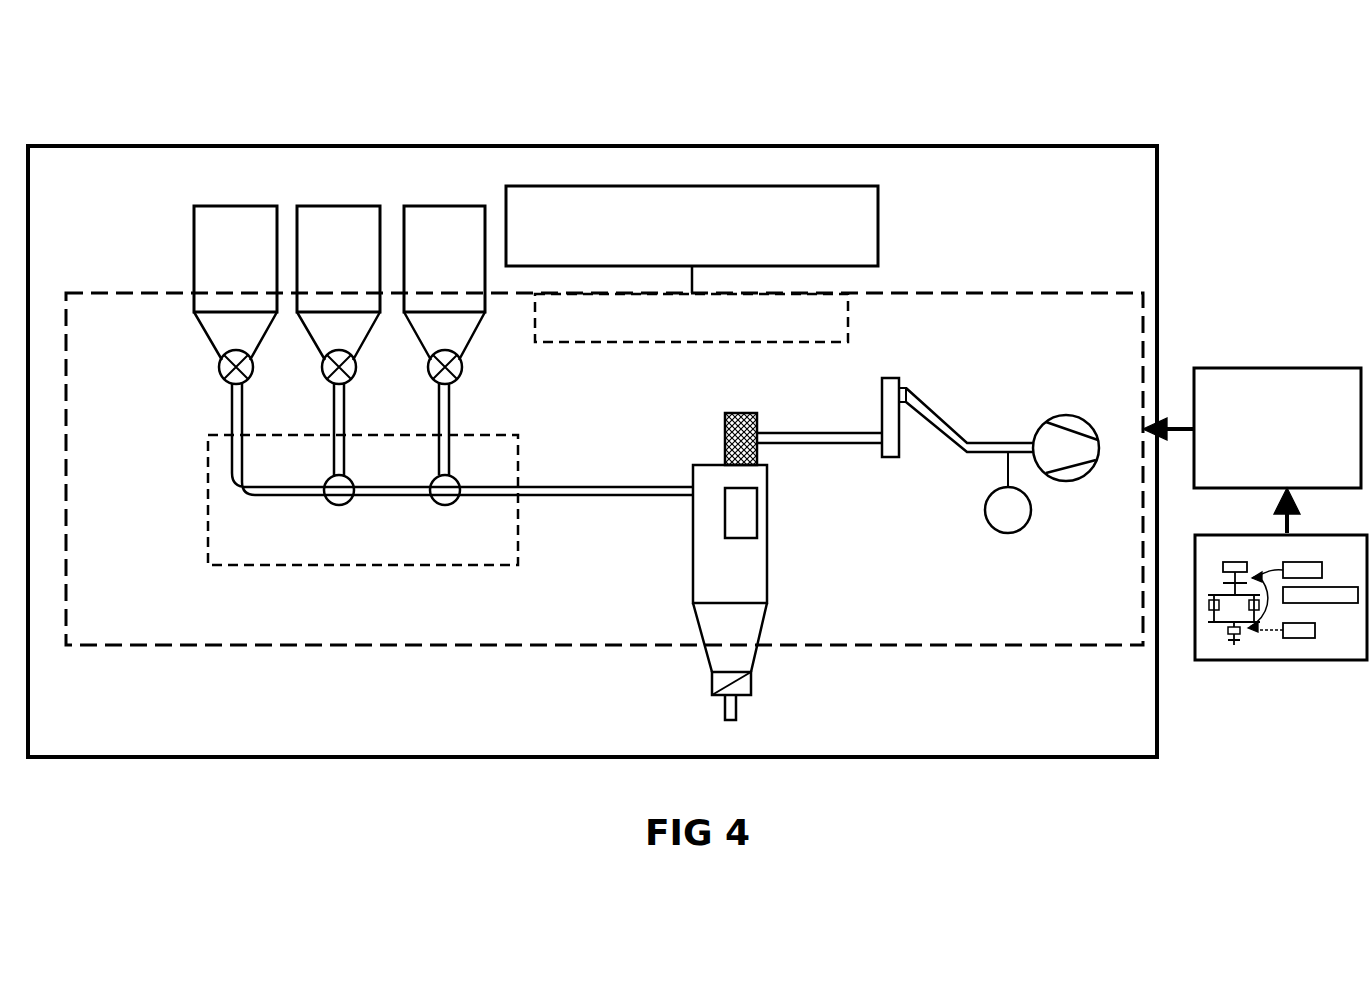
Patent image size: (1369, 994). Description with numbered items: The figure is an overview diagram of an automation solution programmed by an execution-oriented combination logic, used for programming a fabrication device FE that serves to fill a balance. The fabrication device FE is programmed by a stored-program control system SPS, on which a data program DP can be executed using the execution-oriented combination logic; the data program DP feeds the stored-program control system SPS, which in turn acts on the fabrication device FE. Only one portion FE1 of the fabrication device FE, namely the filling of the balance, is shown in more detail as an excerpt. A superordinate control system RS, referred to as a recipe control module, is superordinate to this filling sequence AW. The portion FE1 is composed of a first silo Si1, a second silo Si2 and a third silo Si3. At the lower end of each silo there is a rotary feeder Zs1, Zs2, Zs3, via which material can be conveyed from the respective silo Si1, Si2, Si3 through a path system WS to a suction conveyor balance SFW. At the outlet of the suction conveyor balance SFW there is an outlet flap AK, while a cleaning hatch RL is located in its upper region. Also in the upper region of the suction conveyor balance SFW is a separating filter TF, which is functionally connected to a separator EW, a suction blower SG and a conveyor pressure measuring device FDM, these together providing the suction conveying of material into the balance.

The first silo Si1 is at (225, 220).
The second silo Si2 is at (315, 218).
The third silo Si3 is at (427, 218).
The rotary feeder Zs1 is at (253, 373).
The rotary feeder Zs2 is at (356, 373).
The rotary feeder Zs3 is at (462, 370).
The path system WS is at (243, 533).
The superordinate control system RS is at (880, 218).
The sequence AW is at (632, 343).
The suction conveyor balance SFW is at (705, 573).
The separating filter TF is at (746, 420).
The cleaning hatch RL is at (748, 512).
The outlet flap AK is at (752, 686).
The separator EW is at (890, 380).
The suction blower SG is at (1066, 415).
The conveyor pressure measuring device FDM is at (1005, 533).
The portion of the fabrication device FE1 is at (168, 610).
The fabrication device FE is at (1040, 712).
The stored-program control system SPS is at (1272, 415).
The data program DP is at (1333, 632).